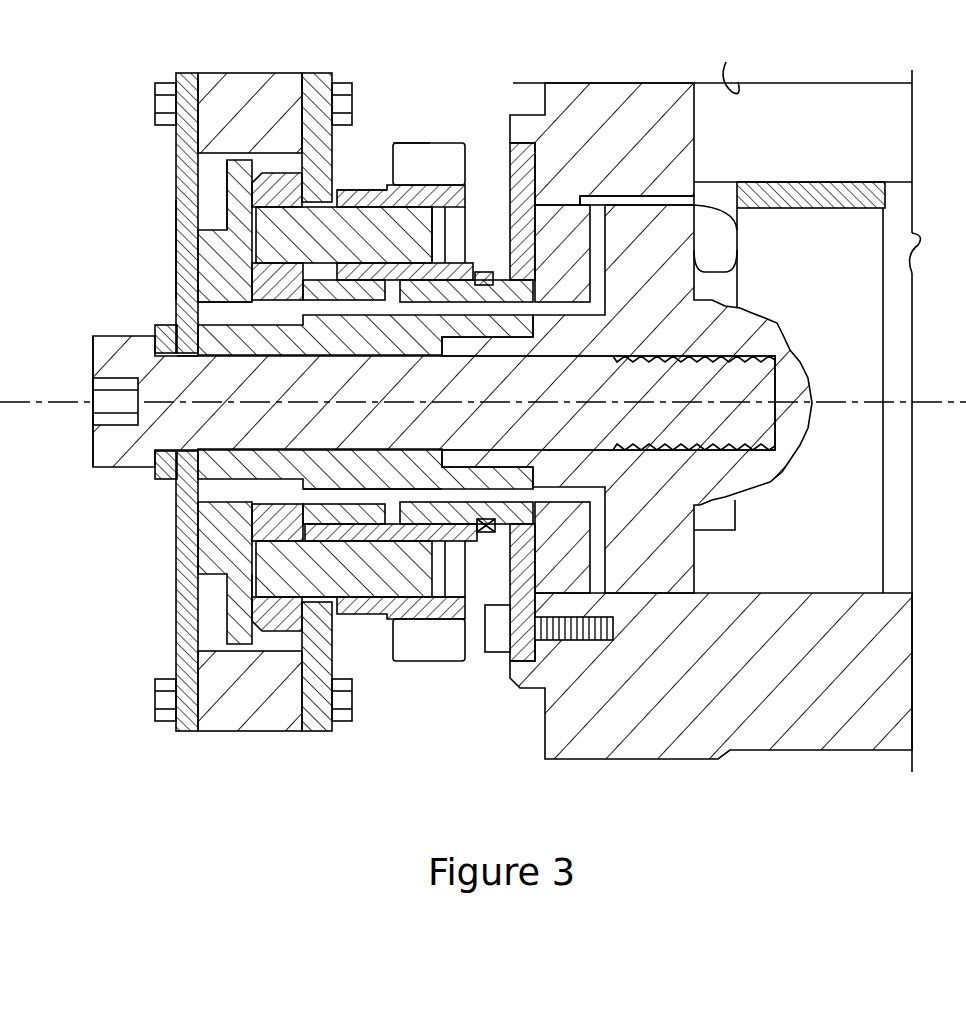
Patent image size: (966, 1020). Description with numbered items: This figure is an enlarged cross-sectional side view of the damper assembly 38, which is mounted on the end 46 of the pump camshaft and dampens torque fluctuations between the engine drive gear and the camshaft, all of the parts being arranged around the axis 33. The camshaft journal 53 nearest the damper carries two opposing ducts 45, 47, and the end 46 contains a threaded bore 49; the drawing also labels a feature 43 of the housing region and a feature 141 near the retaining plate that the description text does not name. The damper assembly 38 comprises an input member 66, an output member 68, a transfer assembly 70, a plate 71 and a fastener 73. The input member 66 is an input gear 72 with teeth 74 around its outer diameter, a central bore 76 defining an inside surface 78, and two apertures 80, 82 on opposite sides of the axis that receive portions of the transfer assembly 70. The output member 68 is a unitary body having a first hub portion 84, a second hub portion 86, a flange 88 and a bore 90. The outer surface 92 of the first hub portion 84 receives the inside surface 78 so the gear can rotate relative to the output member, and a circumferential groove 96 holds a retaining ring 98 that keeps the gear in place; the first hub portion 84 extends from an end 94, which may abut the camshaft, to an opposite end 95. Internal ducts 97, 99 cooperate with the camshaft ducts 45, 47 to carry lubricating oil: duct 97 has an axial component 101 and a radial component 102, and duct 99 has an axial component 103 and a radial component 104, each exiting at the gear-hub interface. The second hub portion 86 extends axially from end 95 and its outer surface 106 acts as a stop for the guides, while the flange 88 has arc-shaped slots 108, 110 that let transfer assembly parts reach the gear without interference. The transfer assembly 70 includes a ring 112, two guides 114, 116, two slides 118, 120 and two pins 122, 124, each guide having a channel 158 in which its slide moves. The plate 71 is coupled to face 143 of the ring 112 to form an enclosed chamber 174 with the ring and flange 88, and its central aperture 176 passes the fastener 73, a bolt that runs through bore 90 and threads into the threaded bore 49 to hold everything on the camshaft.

The axis 33 is at (62, 400).
The damper assembly 38 is at (364, 132).
The bearing retainer plate 43 is at (640, 198).
The duct 45 is at (604, 252).
The end 46 is at (535, 583).
The duct 47 is at (606, 518).
The threaded bore 49 is at (583, 450).
The journal 53 is at (645, 595).
The input member 66 is at (408, 140).
The output member 68 is at (320, 70).
The transfer assembly 70 is at (190, 70).
The plate 71 is at (176, 210).
The input gear 72 is at (450, 143).
The fastener 73 is at (93, 446).
The teeth 74 is at (422, 661).
The central bore 76 is at (462, 263).
The inside surface 78 is at (337, 530).
The aperture 80 is at (467, 215).
The aperture 82 is at (448, 619).
The first hub portion 84 is at (441, 262).
The second hub portion 86 is at (225, 318).
The flange 88 is at (300, 108).
The bore 90 is at (197, 357).
The outer surface 92 is at (410, 540).
The end 94 is at (533, 522).
The opposite end 95 is at (305, 486).
The circumferential groove 96 is at (488, 534).
The duct 97 is at (362, 322).
The retaining ring 98 is at (478, 538).
The duct 99 is at (310, 477).
The axial component 101 is at (320, 280).
The radial component 102 is at (385, 285).
The axial component 103 is at (300, 512).
The radial component 104 is at (372, 504).
The outer surface 106 is at (178, 322).
The slot 108 is at (332, 205).
The slot 110 is at (332, 600).
The ring 112 is at (268, 70).
The guide 114 is at (224, 165).
The guide 116 is at (216, 633).
The slide 118 is at (240, 198).
The slide 120 is at (242, 603).
The pin 122 is at (220, 238).
The pin 124 is at (240, 573).
The bore 141 is at (312, 102).
The face 143 is at (176, 103).
The channel 158 is at (246, 640).
The chamber 174 is at (208, 560).
The aperture 176 is at (200, 450).